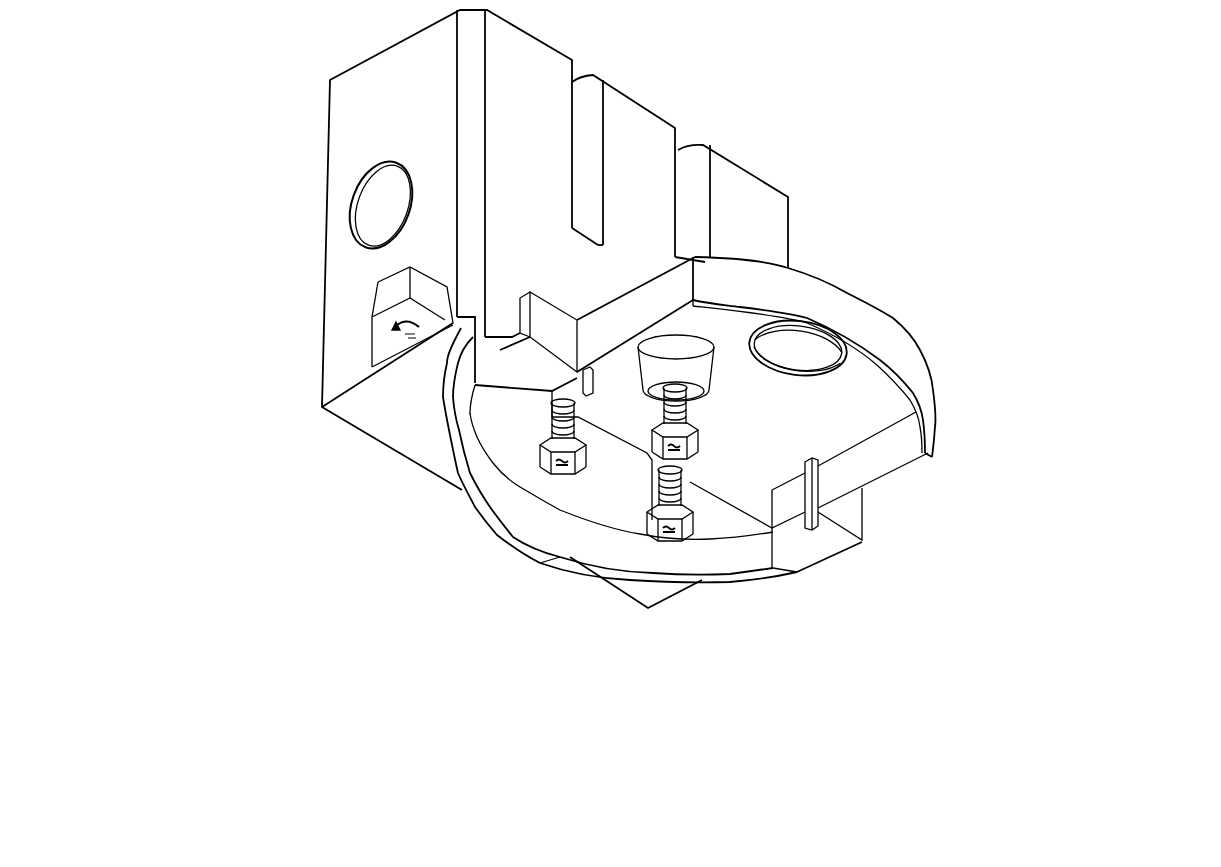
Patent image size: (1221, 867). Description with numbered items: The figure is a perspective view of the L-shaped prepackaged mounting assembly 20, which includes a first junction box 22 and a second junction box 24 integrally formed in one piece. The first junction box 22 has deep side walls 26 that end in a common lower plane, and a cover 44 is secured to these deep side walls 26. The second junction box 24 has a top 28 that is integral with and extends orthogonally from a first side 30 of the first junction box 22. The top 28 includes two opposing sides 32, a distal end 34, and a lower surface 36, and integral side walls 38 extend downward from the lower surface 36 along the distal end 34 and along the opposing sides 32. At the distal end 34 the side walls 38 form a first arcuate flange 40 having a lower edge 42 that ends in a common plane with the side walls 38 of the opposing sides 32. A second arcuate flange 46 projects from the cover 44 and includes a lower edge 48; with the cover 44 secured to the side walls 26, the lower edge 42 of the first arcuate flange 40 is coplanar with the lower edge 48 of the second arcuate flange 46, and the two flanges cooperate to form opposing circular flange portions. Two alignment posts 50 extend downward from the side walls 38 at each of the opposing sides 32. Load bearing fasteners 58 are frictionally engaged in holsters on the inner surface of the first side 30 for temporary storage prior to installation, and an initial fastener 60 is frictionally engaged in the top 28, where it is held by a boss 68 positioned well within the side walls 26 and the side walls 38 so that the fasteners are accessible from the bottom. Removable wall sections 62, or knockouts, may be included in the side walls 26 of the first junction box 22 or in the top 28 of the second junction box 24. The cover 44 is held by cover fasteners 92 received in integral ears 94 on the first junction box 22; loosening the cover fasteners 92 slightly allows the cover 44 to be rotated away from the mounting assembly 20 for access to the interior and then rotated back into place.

The prepackaged mounting assembly 20 is at (962, 128).
The first junction box 22 is at (292, 215).
The second junction box 24 is at (948, 322).
The deep side walls 26 is at (420, 120).
The top 28 is at (825, 427).
The first side 30 is at (637, 142).
The opposing sides 32 is at (605, 314).
The distal end 34 is at (893, 318).
The lower surface 36 is at (761, 412).
The side walls 38 is at (669, 310).
The first arcuate flange 40 is at (903, 355).
The lower edge 42 is at (868, 358).
The cover 44 is at (412, 422).
The second arcuate flange 46 is at (539, 522).
The lower edge 48 is at (566, 505).
The alignment posts 50 is at (575, 392).
The load bearing fastener 58 is at (561, 478).
The initial fastener 60 is at (693, 445).
The removable wall sections 62 is at (397, 217).
The boss 68 is at (691, 370).
The cover fasteners 92 is at (390, 330).
The integral ears 94 is at (390, 292).